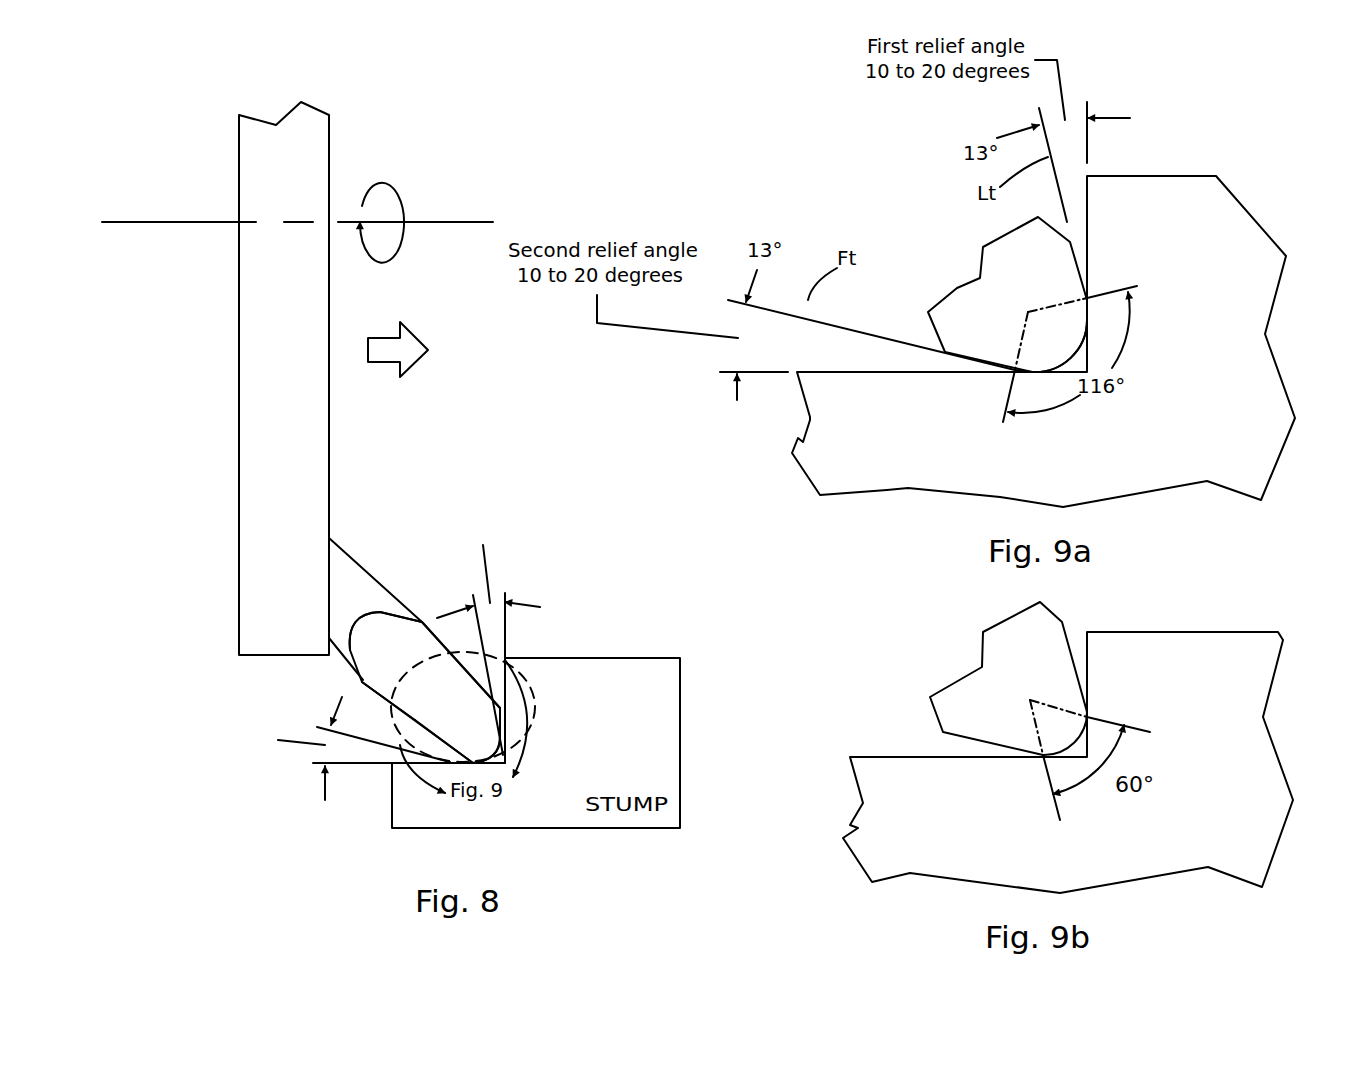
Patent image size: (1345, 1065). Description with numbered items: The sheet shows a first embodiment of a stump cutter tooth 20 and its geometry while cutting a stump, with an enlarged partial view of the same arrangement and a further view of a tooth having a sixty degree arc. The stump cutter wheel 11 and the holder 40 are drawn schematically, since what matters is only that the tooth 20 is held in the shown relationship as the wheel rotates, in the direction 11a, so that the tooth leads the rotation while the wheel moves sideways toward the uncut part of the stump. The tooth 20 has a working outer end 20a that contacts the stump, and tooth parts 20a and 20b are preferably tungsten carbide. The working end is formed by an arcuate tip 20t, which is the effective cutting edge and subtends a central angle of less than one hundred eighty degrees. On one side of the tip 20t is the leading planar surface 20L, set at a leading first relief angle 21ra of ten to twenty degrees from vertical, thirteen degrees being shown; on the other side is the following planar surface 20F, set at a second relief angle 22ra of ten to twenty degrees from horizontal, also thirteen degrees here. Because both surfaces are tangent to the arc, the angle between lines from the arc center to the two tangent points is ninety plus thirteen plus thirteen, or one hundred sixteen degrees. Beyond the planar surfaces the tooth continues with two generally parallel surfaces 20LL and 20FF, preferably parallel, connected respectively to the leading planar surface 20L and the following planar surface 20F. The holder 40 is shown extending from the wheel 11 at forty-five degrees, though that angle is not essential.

In FIG. 8, the stump cutter wheel 11 is at (252, 331).
In FIG. 8, the direction of rotation of blade 11a is at (439, 222).
In FIG. 8, the holder 40 is at (350, 603).
In FIG. 8, the tooth 20 is at (457, 677).
In FIG. 8, the working outer end 20a is at (487, 742).
In FIG. 9A, the working outer end 20a is at (1053, 280).
In FIG. 8, the tooth part 20b is at (372, 633).
In FIG. 8, the second generally parallel surface 20LL is at (502, 654).
In FIG. 8, the leading planar surface 20L is at (495, 680).
In FIG. 8, the following planar surface 20F is at (443, 760).
In FIG. 8, the second generally parallel surface 20FF is at (417, 743).
In FIG. 8, the arcuate tip 20t is at (490, 760).
In FIG. 9A, the arcuate tip 20t is at (1053, 370).
In FIG. 8, the first relief angle 21ra is at (473, 510).
In FIG. 8, the second relief angle 22ra is at (180, 752).